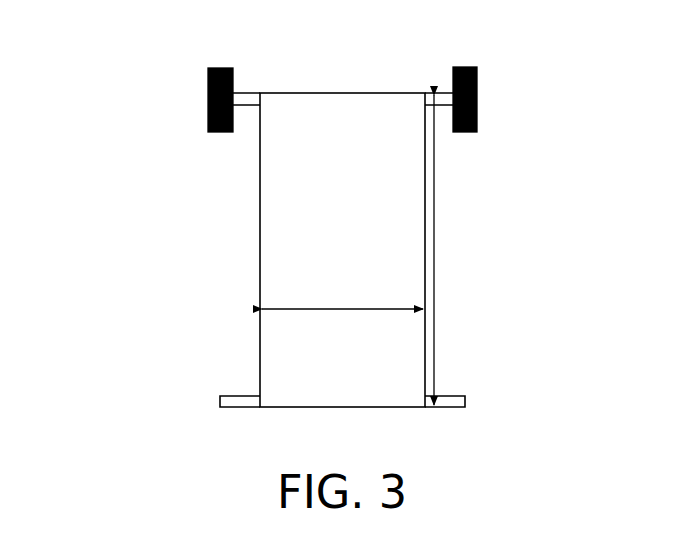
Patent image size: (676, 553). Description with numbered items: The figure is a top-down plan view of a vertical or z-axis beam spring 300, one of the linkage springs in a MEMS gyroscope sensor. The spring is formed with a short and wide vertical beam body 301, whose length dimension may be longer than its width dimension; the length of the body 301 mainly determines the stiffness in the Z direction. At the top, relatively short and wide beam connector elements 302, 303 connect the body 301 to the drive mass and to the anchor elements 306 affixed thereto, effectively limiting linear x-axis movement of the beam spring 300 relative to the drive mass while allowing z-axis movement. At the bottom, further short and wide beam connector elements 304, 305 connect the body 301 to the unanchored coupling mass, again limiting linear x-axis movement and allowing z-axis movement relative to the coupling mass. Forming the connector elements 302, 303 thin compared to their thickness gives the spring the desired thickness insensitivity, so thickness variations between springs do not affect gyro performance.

The vertical or z-axis beam spring 300 is at (102, 40).
The vertical beam body 301 is at (329, 241).
The beam connector element 302 is at (245, 97).
The beam connector element 303 is at (443, 99).
The beam connector element 304 is at (240, 405).
The beam connector element 305 is at (449, 405).
The anchor element 306 is at (208, 90).